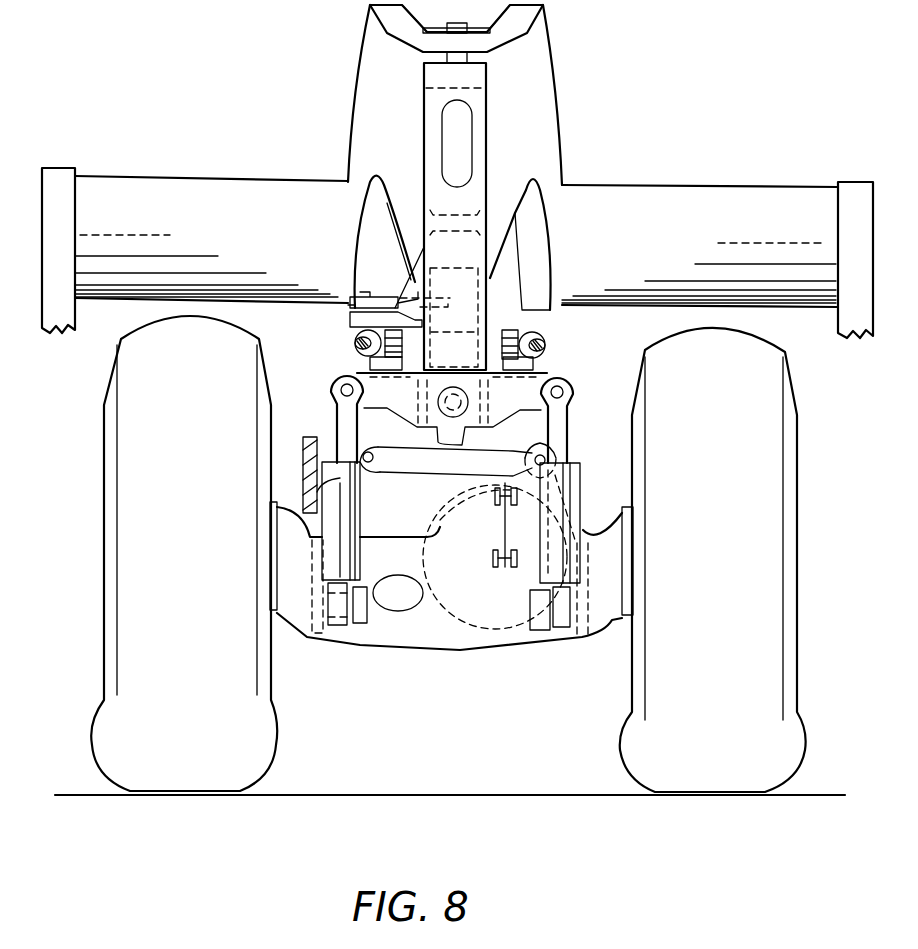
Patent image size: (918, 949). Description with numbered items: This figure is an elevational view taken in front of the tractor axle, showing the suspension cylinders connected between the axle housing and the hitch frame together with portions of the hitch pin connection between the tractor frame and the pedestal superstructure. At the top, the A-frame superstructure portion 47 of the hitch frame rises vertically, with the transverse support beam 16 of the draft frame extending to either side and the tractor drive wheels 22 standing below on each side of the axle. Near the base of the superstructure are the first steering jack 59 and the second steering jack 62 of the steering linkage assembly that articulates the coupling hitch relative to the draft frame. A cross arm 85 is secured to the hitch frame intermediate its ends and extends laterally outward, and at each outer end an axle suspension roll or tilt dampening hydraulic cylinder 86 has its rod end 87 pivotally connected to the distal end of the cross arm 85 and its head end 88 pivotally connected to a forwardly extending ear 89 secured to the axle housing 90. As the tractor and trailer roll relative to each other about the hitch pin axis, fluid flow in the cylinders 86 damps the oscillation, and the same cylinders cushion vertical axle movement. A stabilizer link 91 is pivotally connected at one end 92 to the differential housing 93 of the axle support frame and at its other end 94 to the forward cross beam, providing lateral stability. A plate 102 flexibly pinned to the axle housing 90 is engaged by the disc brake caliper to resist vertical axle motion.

The A-frame superstructure portion 47 is at (490, 178).
The transverse support beam 16 is at (128, 300).
The tractor drive wheels 22 is at (797, 392).
The second steering jack 62 is at (355, 338).
The first steering jack 59 is at (546, 330).
The cross arm 85 is at (521, 404).
The rod end 87 is at (336, 415).
The stabilizer link 91 is at (482, 480).
The other end of stabilizer link 94 is at (372, 450).
The one end of stabilizer link 92 is at (543, 455).
The axle suspension roll or tilt dampening hydraulic cylinder 86 is at (362, 513).
The plate 102 is at (503, 527).
The head end 88 is at (310, 568).
The forwardly extending ear 89 is at (360, 648).
The axle housing 90 is at (457, 655).
The differential housing 93 is at (492, 593).